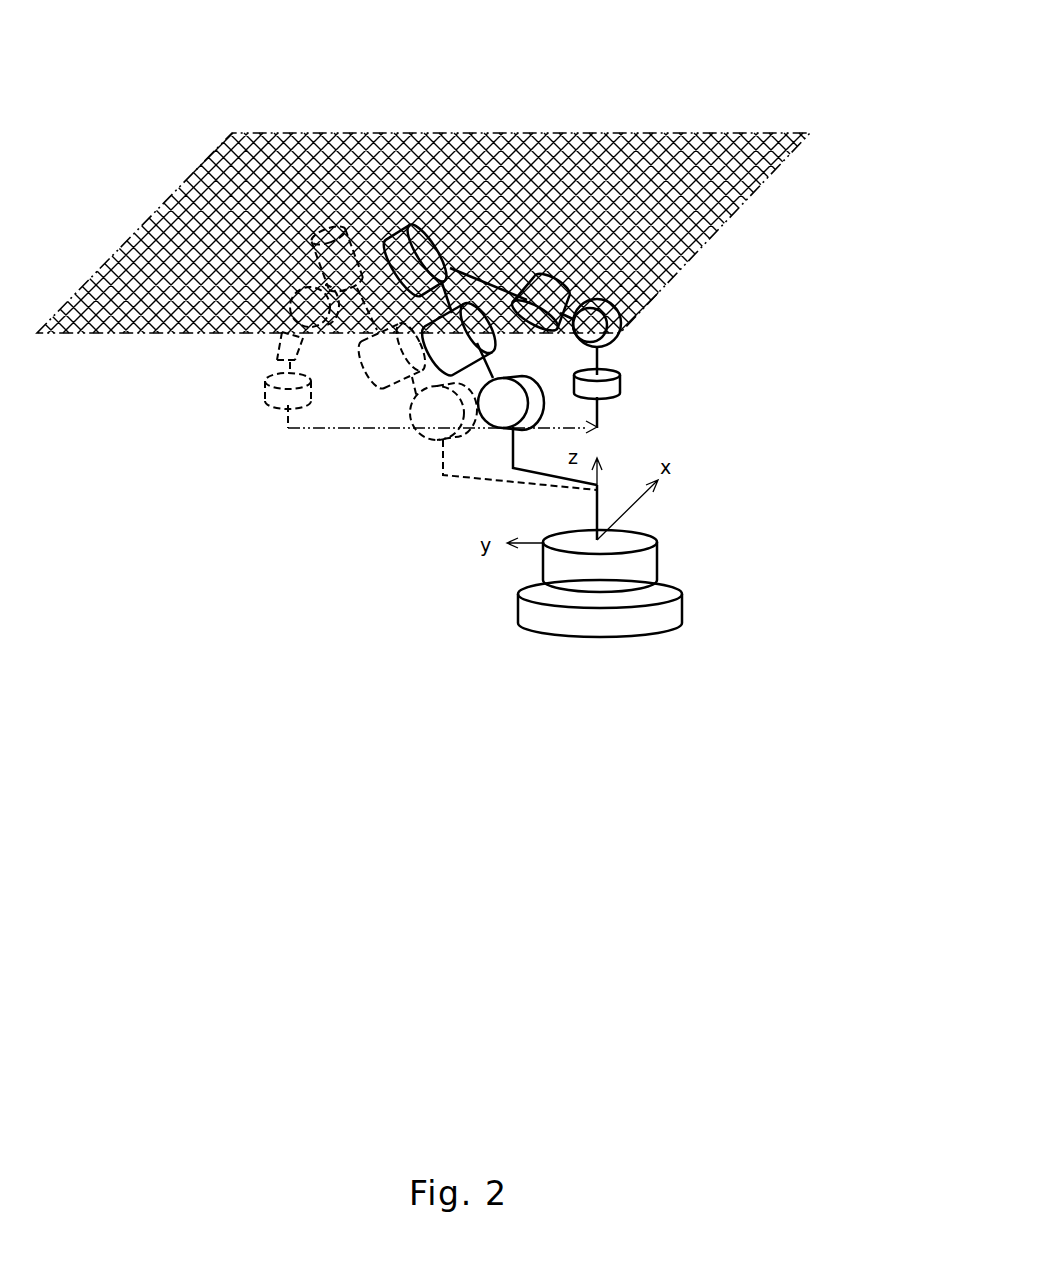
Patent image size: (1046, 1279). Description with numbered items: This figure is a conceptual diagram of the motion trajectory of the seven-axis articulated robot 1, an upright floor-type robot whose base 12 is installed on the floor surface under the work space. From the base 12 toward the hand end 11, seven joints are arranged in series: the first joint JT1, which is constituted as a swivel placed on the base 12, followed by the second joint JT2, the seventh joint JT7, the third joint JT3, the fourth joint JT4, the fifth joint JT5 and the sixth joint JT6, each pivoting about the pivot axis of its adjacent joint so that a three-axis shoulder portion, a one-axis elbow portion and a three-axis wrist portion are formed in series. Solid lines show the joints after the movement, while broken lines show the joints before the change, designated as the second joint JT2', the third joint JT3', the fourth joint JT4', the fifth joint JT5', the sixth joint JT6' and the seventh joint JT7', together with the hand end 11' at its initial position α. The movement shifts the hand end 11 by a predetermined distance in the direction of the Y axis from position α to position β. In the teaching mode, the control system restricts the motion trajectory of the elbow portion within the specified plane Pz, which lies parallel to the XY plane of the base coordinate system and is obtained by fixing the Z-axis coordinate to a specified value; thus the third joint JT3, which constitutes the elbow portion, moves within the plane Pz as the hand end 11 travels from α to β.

The seven-axis articulated robot 1 is at (753, 603).
The hand end 11 is at (620, 348).
The hand end 11' is at (354, 410).
The base 12 is at (523, 615).
The plane Pz is at (700, 130).
The first joint JT1 is at (655, 562).
The second joint JT2 is at (561, 418).
The third joint JT3 is at (438, 225).
The fourth joint JT4 is at (575, 264).
The fifth joint JT5 is at (650, 312).
The sixth joint JT6 is at (648, 372).
The seventh joint JT7 is at (489, 300).
The second joint JT2' is at (402, 457).
The third joint JT3' is at (306, 224).
The fourth joint JT4' is at (253, 295).
The fifth joint JT5' is at (230, 364).
The sixth joint JT6' is at (223, 405).
The seventh joint JT7' is at (348, 404).